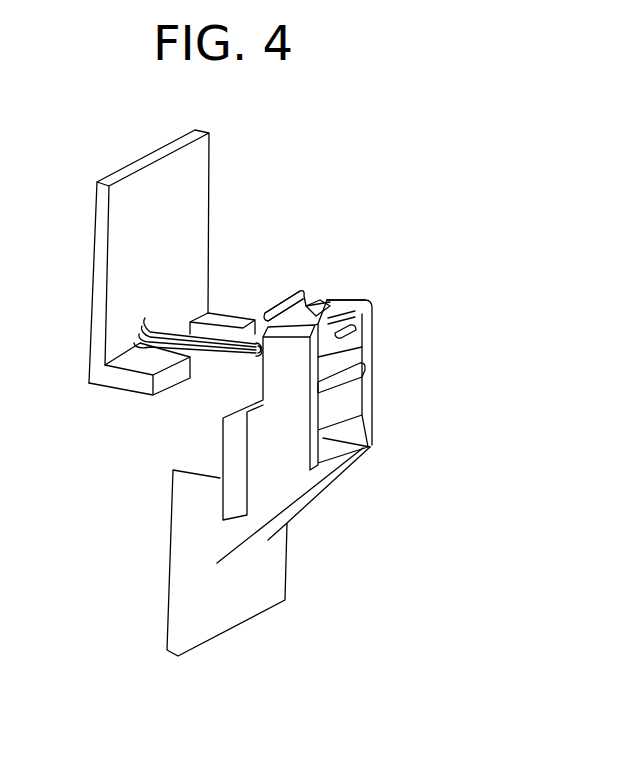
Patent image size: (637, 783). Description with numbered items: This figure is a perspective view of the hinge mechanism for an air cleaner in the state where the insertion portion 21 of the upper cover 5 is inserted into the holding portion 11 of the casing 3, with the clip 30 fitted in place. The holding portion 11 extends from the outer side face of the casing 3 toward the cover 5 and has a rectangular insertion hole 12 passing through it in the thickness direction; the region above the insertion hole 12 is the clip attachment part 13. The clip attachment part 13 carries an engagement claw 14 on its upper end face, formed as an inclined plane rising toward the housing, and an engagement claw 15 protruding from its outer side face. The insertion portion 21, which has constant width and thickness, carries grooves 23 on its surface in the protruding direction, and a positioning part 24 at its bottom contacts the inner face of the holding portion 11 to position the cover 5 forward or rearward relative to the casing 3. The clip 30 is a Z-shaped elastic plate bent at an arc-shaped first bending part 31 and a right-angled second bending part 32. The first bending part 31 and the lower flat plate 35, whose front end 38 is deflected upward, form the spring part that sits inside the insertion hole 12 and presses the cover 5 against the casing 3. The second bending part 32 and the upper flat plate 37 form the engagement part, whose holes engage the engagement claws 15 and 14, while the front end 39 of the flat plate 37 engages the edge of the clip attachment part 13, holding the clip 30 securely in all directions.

The casing 3 is at (255, 597).
The upper cover 5 is at (199, 150).
The holding portion 11 is at (387, 437).
The insertion hole 12 is at (298, 340).
The clip attachment part 13 is at (262, 378).
The engagement claw 14 is at (315, 305).
The engagement claw 15 is at (347, 312).
The insertion portion 21 is at (209, 313).
The grooves 23 is at (187, 325).
The positioning part 24 is at (137, 385).
The clip 30 is at (305, 278).
The first bending part 31 is at (254, 362).
The second bending part 32 is at (372, 322).
The lower flat plate 35 is at (372, 353).
The upper flat plate 37 is at (343, 303).
The front end 38 is at (372, 378).
The front end 39 is at (283, 303).